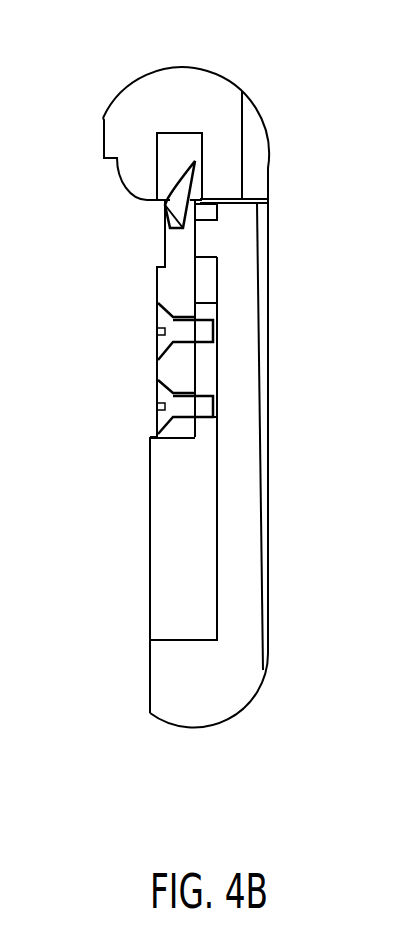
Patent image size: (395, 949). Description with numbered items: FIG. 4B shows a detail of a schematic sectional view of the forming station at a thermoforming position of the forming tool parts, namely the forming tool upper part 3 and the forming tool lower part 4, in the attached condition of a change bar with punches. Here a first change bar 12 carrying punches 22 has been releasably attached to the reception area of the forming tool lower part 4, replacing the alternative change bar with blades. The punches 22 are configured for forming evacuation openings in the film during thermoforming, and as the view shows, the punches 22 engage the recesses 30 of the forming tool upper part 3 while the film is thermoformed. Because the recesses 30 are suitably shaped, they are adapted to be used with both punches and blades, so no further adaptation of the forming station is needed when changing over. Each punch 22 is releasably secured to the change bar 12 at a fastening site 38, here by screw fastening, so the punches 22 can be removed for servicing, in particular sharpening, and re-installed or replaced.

The forming tool upper part 3 is at (82, 113).
The forming tool lower part 4 is at (138, 715).
The change bar 12 is at (138, 330).
The punch 22 is at (203, 194).
The recess 30 is at (177, 165).
The fastening site 38 is at (200, 368).